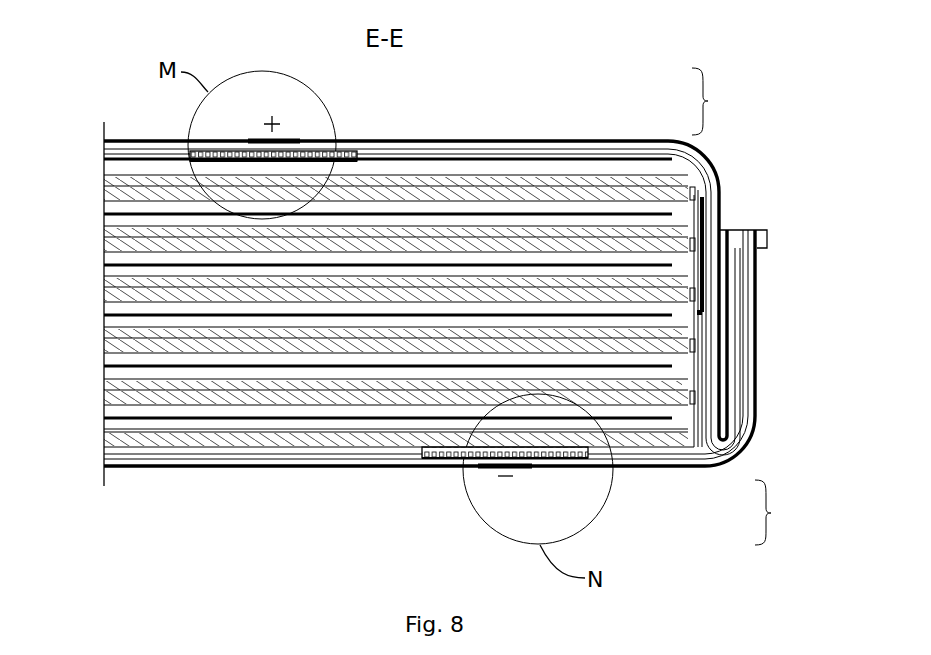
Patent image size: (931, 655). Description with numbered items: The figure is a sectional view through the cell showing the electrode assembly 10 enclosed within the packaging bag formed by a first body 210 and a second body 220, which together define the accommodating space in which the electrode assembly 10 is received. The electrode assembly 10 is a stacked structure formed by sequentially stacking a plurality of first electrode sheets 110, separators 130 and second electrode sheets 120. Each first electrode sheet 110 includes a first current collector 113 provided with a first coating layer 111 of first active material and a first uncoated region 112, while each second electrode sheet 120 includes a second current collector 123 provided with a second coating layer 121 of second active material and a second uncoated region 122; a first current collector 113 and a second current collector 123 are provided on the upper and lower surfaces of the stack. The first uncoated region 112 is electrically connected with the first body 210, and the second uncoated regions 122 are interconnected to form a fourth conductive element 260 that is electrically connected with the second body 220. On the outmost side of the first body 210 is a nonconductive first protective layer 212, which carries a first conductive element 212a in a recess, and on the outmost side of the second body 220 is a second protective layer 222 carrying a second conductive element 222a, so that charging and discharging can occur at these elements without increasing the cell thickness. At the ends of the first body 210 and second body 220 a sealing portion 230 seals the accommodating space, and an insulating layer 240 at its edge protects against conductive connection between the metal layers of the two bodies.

The electrode assembly 10 is at (434, 306).
The first electrode sheet 110 is at (402, 256).
The first coating layer 111 is at (130, 168).
The first uncoated region 112 is at (130, 158).
The first current collector 113 is at (537, 214).
The second electrode sheet 120 is at (434, 361).
The second coating layer 121 is at (133, 231).
The second uncoated region 122 is at (133, 451).
The second current collector 123 is at (663, 417).
The separator 130 is at (130, 175).
The first body 210 is at (158, 140).
The first protective layer 212 is at (438, 141).
The first conductive element 212a is at (300, 151).
The second body 220 is at (212, 467).
The second protective layer 222 is at (322, 467).
The second conductive element 222a is at (463, 478).
The sealing portion 230 is at (742, 292).
The insulating layer 240 is at (745, 231).
The fourth conductive element 260 is at (700, 314).